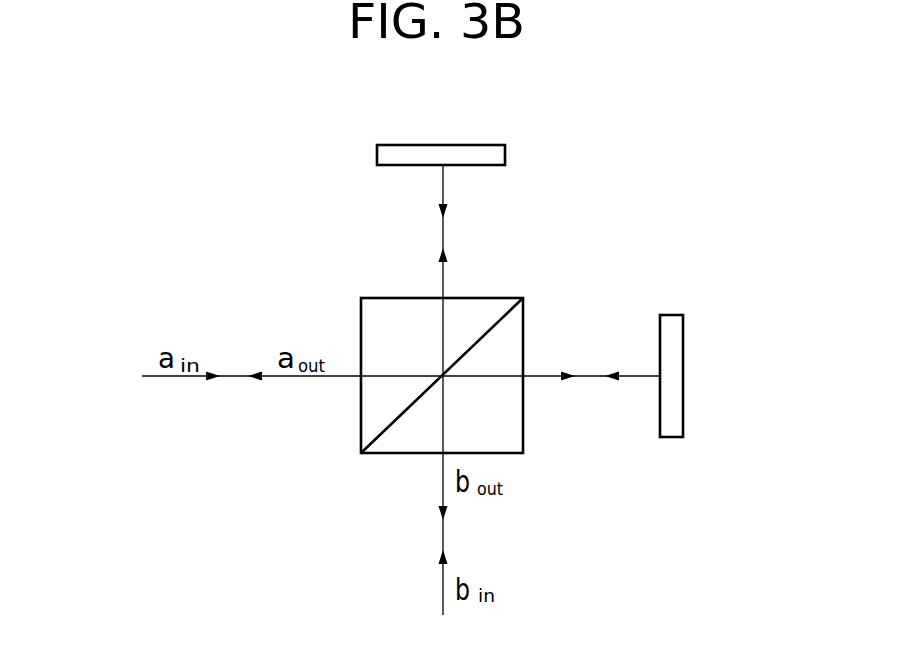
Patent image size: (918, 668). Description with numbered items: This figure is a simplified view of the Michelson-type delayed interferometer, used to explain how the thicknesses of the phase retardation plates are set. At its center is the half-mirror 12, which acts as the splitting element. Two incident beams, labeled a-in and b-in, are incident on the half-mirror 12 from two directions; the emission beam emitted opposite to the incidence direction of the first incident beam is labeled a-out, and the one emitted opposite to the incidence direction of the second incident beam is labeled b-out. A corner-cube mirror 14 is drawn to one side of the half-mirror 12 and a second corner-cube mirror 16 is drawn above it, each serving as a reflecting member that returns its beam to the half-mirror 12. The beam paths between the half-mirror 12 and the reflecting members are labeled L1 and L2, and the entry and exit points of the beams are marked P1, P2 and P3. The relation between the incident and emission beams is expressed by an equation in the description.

The half-mirror 12 is at (493, 297).
The corner-cube mirror 14 is at (673, 315).
The corner-cube mirror 16 is at (505, 153).
The light beam L1 is at (546, 378).
The light beam L2 is at (442, 274).
The port P1 is at (140, 360).
The port P2 is at (251, 327).
The port P3 is at (464, 613).